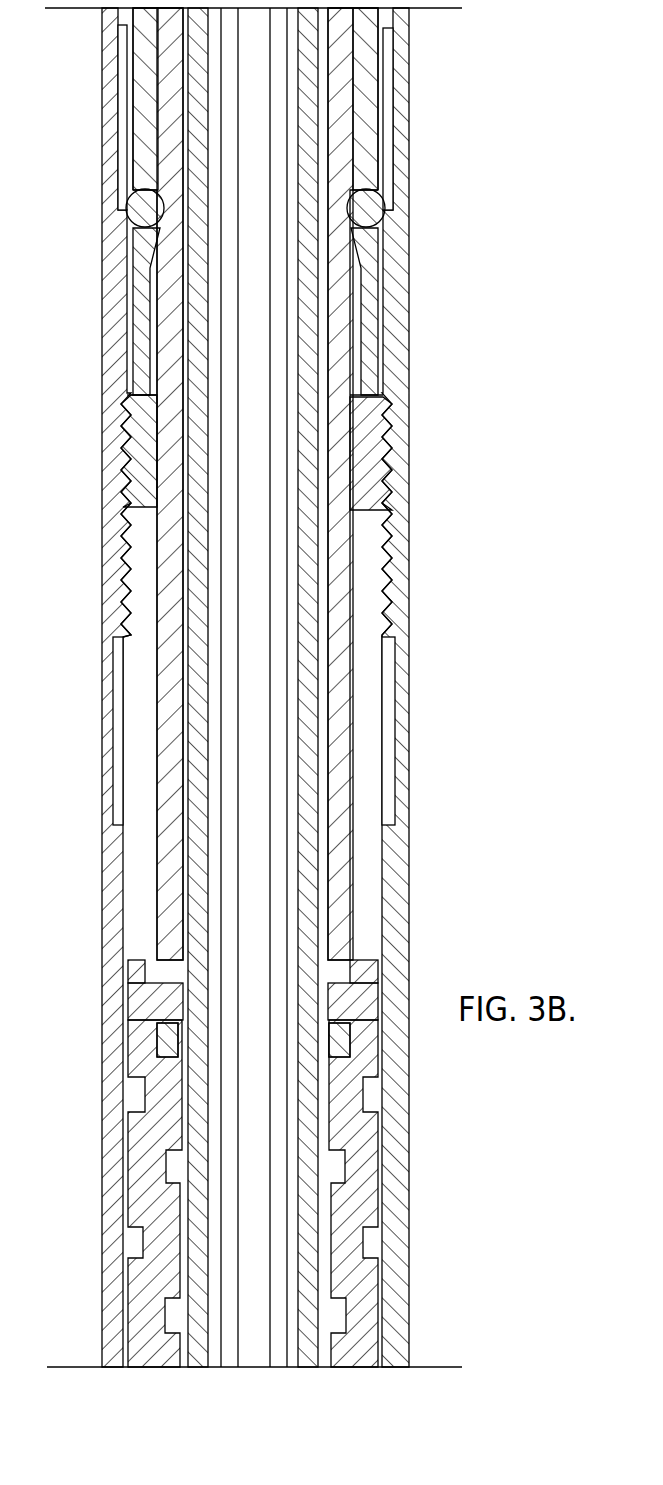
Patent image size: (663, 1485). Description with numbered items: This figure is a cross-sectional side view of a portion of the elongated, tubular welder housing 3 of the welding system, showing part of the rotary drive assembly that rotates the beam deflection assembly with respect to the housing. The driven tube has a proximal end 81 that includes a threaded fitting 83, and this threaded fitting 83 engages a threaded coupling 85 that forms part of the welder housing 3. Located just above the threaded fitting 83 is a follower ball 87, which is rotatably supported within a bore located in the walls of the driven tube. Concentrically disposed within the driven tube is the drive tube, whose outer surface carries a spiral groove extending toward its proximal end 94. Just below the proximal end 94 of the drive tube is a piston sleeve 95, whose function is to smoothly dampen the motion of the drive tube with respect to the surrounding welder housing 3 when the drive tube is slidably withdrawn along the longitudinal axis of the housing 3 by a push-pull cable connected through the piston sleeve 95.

The welder housing 3 is at (414, 148).
The proximal end of the driven tube 81 is at (147, 243).
The threaded fitting 83 is at (118, 463).
The threaded coupling 85 is at (108, 573).
The follower ball 87 is at (126, 215).
The proximal end of the drive tube 94 is at (299, 484).
The piston sleeve 95 is at (365, 1177).